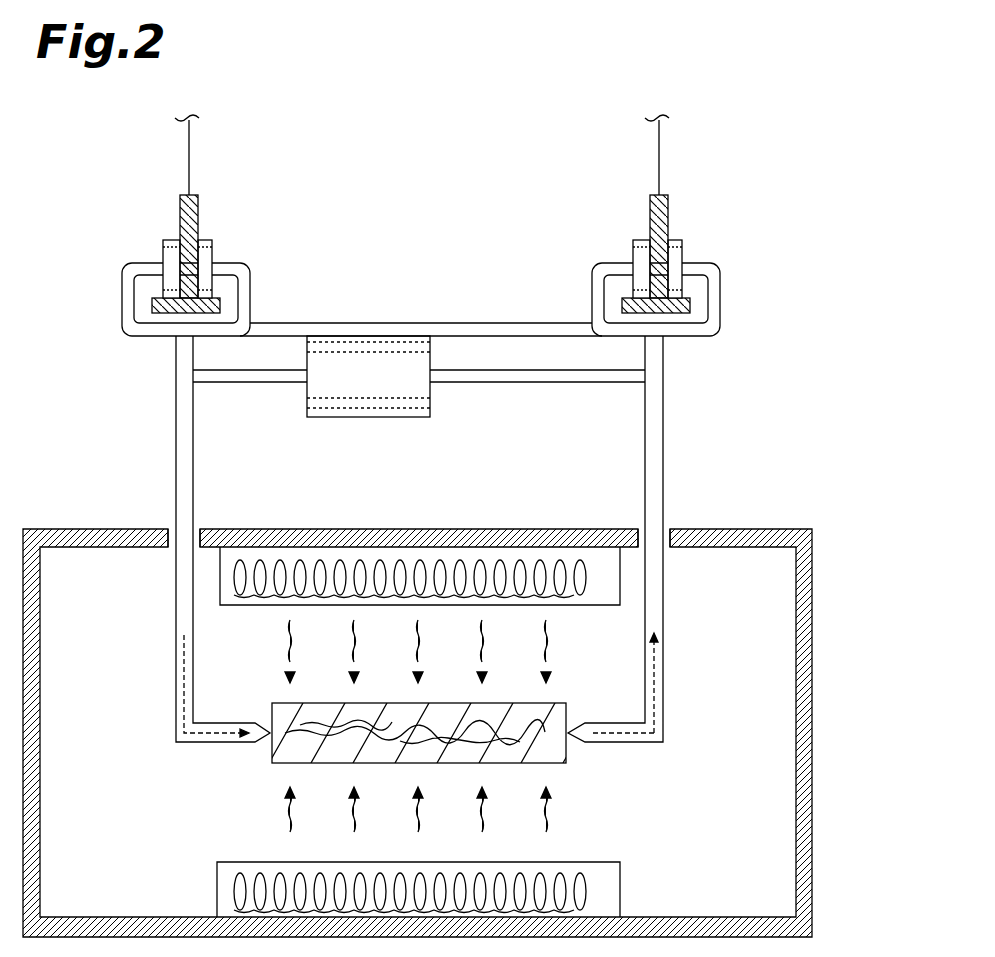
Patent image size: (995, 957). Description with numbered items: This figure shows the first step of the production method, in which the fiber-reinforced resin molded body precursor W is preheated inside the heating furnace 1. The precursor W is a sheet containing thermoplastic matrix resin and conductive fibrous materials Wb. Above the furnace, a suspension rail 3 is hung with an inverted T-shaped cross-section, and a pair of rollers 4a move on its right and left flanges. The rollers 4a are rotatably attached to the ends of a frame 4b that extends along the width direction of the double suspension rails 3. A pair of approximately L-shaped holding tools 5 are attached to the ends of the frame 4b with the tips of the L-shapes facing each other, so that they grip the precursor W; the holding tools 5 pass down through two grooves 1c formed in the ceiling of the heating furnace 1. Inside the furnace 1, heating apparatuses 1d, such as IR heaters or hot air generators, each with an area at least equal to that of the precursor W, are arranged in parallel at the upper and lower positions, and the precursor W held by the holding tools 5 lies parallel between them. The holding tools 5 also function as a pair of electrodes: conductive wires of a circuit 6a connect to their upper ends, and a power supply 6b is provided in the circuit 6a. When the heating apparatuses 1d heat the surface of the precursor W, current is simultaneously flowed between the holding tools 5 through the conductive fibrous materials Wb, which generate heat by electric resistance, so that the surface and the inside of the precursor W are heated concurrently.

The heating furnace 1 is at (812, 780).
The groove 1c is at (197, 522).
The heating apparatus 1d is at (612, 606).
The suspension rail 3 is at (197, 213).
The roller 4a is at (162, 256).
The frame 4b is at (457, 322).
The holding tool 5 is at (176, 432).
The circuit 6a is at (277, 383).
The power supply 6b is at (380, 398).
The fiber-reinforced resin molded body precursor W is at (287, 767).
The conductive fibrous material Wb is at (545, 748).